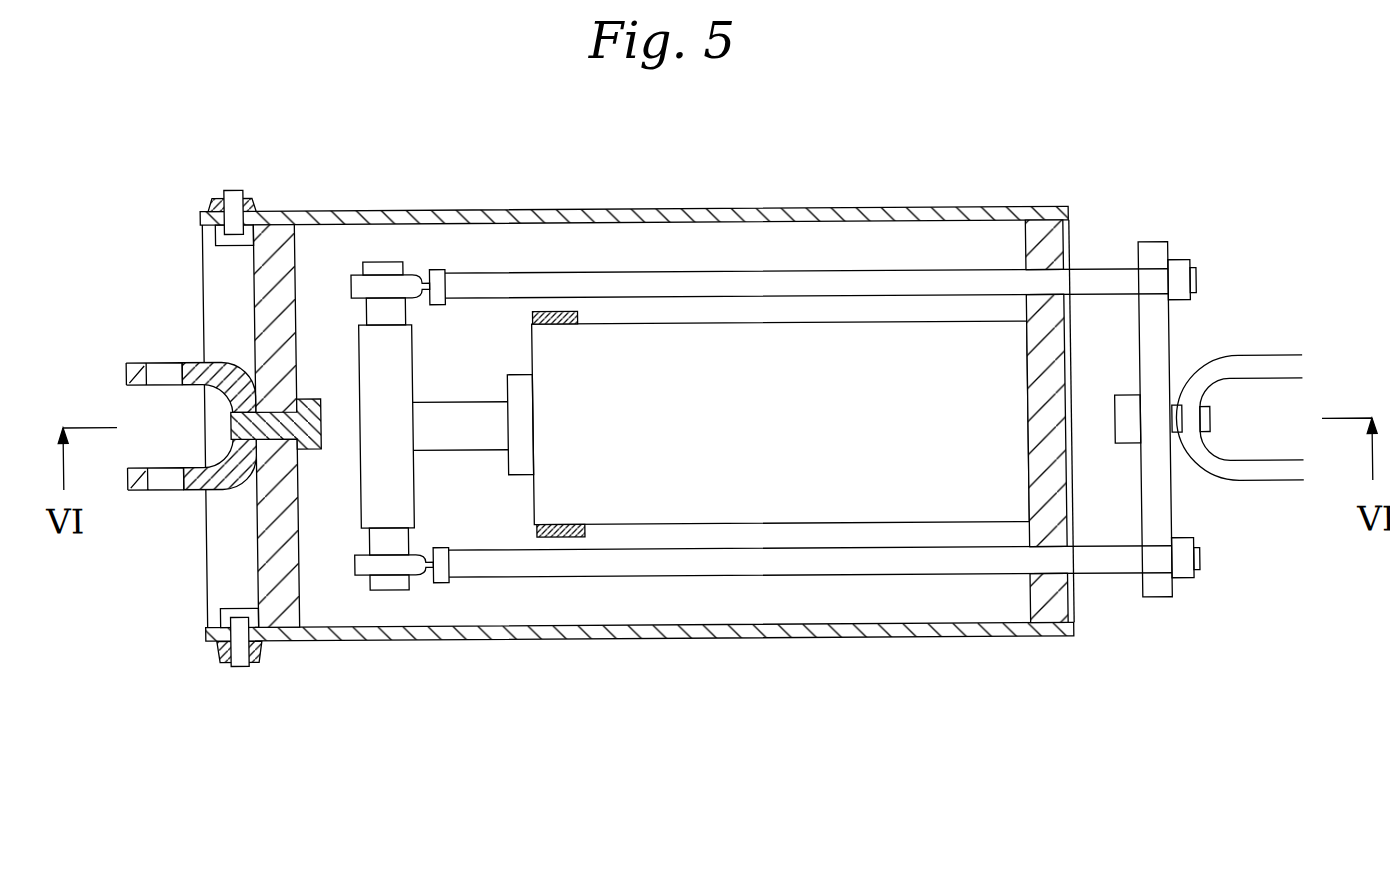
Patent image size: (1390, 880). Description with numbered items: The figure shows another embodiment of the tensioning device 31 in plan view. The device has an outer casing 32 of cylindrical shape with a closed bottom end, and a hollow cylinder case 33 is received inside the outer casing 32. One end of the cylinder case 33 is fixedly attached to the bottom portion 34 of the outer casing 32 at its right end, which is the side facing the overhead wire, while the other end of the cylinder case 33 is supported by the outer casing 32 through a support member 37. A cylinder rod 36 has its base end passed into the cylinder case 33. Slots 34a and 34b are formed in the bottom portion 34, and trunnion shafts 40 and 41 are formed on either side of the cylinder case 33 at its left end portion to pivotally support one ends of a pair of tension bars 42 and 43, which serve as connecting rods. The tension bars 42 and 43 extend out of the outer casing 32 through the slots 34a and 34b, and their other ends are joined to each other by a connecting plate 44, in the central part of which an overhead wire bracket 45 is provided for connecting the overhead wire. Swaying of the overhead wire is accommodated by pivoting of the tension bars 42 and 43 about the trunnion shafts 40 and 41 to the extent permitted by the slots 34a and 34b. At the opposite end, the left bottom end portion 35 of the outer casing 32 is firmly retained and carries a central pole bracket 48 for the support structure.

The tensioning device 31 is at (895, 205).
The outer casing 32 is at (702, 209).
The cylinder case 33 is at (843, 509).
The bottom portion 34 is at (1055, 505).
The slot 34a is at (1053, 264).
The slot 34b is at (1050, 590).
The left bottom end portion 35 is at (283, 262).
The cylinder rod 36 is at (463, 401).
The support member 37 is at (552, 311).
The trunnion shaft 40 is at (395, 260).
The trunnion shaft 41 is at (395, 588).
The tension bar 42 is at (723, 273).
The tension bar 43 is at (670, 576).
The connecting plate 44 is at (1157, 331).
The overhead wire bracket 45 is at (1270, 359).
The pole bracket 48 is at (135, 369).